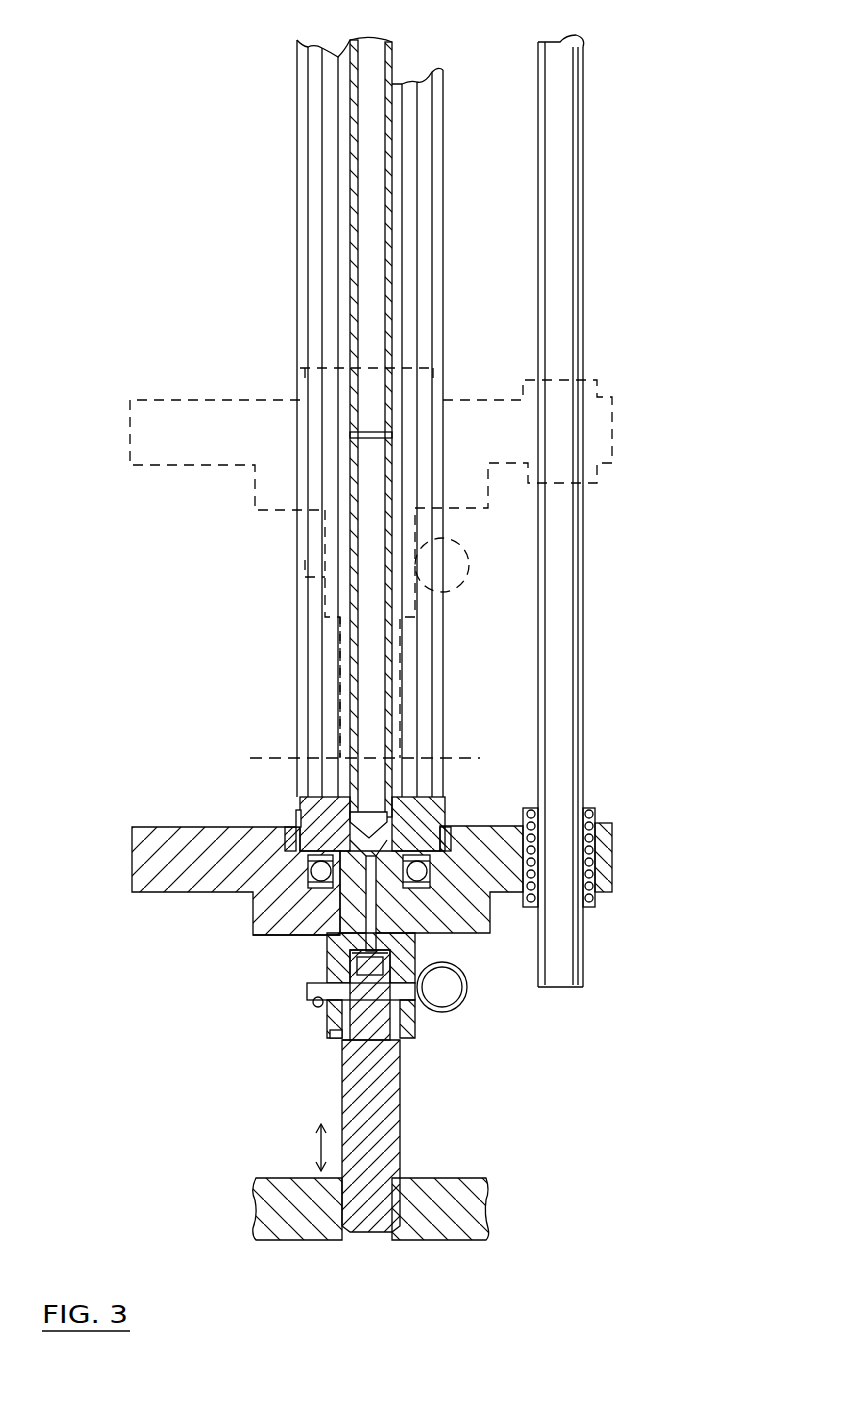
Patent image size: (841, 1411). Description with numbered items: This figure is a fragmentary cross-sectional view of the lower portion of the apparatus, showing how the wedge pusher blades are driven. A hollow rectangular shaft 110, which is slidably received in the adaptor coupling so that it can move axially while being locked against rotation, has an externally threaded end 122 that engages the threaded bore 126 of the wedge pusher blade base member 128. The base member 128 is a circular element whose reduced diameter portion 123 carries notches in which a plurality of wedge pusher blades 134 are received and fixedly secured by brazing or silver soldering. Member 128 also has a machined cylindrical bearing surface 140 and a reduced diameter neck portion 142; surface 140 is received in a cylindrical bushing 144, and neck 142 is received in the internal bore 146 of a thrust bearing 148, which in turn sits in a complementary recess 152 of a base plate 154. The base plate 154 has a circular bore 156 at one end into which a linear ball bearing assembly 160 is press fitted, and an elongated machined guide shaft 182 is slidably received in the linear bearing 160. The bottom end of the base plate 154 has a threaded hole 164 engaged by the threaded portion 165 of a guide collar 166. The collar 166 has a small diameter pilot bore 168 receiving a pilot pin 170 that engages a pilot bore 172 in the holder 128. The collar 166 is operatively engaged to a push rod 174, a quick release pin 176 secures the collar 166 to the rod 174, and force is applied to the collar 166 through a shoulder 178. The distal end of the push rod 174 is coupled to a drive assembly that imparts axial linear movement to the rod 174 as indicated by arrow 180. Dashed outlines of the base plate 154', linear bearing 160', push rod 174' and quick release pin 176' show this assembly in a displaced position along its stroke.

The hollow rectangular shaft 110 is at (392, 62).
The end of shaft 122 is at (392, 757).
The reduced diameter portion 123 is at (298, 820).
The threaded bore 126 is at (430, 812).
The wedge pusher blade base member 128 is at (300, 797).
The wedge pusher blades 134 is at (437, 683).
The cylindrical bearing surface 140 is at (445, 815).
The neck portion 142 is at (482, 927).
The cylindrical bushing 144 is at (290, 838).
The internal bore 146 is at (340, 928).
The thrust bearing 148 is at (262, 937).
The recess 152 is at (253, 897).
The base plate 154 is at (192, 881).
The valve body alternate position 154' is at (281, 563).
The circular bore 156 is at (597, 840).
The linear ball bearing assembly 160 is at (599, 847).
The spring alternate position 160' is at (549, 555).
The threaded hole 164 is at (422, 935).
The threaded portion 165 is at (355, 965).
The guide collar 166 is at (420, 1020).
The pilot bore 168 is at (312, 1003).
The pilot pin 170 is at (335, 1036).
The pilot bore 172 is at (403, 858).
The push rod 174 is at (410, 1091).
The actuating shaft alternate position 174' is at (433, 676).
The quick release pin 176 is at (476, 995).
The ring alternate position 176' is at (475, 558).
The shoulder 178 is at (348, 1048).
The arrow 180 is at (318, 1145).
The guide shaft 182 is at (578, 577).